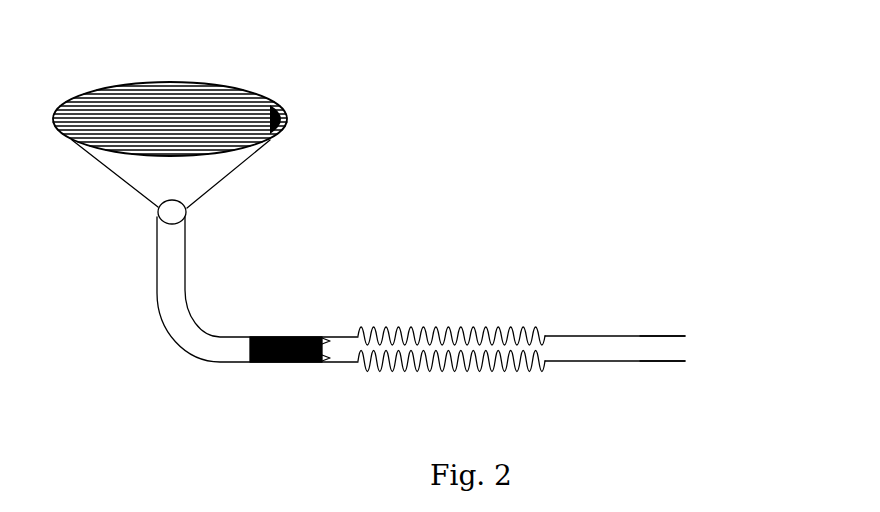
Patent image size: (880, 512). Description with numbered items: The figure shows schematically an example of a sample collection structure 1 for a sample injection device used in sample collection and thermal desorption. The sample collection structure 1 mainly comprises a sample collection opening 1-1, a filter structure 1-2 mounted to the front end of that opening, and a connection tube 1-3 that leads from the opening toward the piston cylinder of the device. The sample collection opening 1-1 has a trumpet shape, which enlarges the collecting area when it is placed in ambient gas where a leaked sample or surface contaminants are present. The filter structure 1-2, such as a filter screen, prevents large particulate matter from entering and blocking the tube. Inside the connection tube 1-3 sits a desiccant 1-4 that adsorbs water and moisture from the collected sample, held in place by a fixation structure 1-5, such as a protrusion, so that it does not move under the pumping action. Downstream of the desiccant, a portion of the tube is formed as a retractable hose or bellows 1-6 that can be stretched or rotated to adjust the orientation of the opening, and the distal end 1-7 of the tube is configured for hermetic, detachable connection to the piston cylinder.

The sample collection structure 1 is at (600, 153).
The sample collection opening 1-1 is at (168, 182).
The filter structure 1-2 is at (167, 112).
The connection tube 1-3 is at (187, 258).
The desiccant 1-4 is at (283, 337).
The structure for fixation of the desiccant 1-5 is at (325, 340).
The retractable hose or bellows 1-6 is at (447, 332).
The distal end 1-7 is at (685, 336).